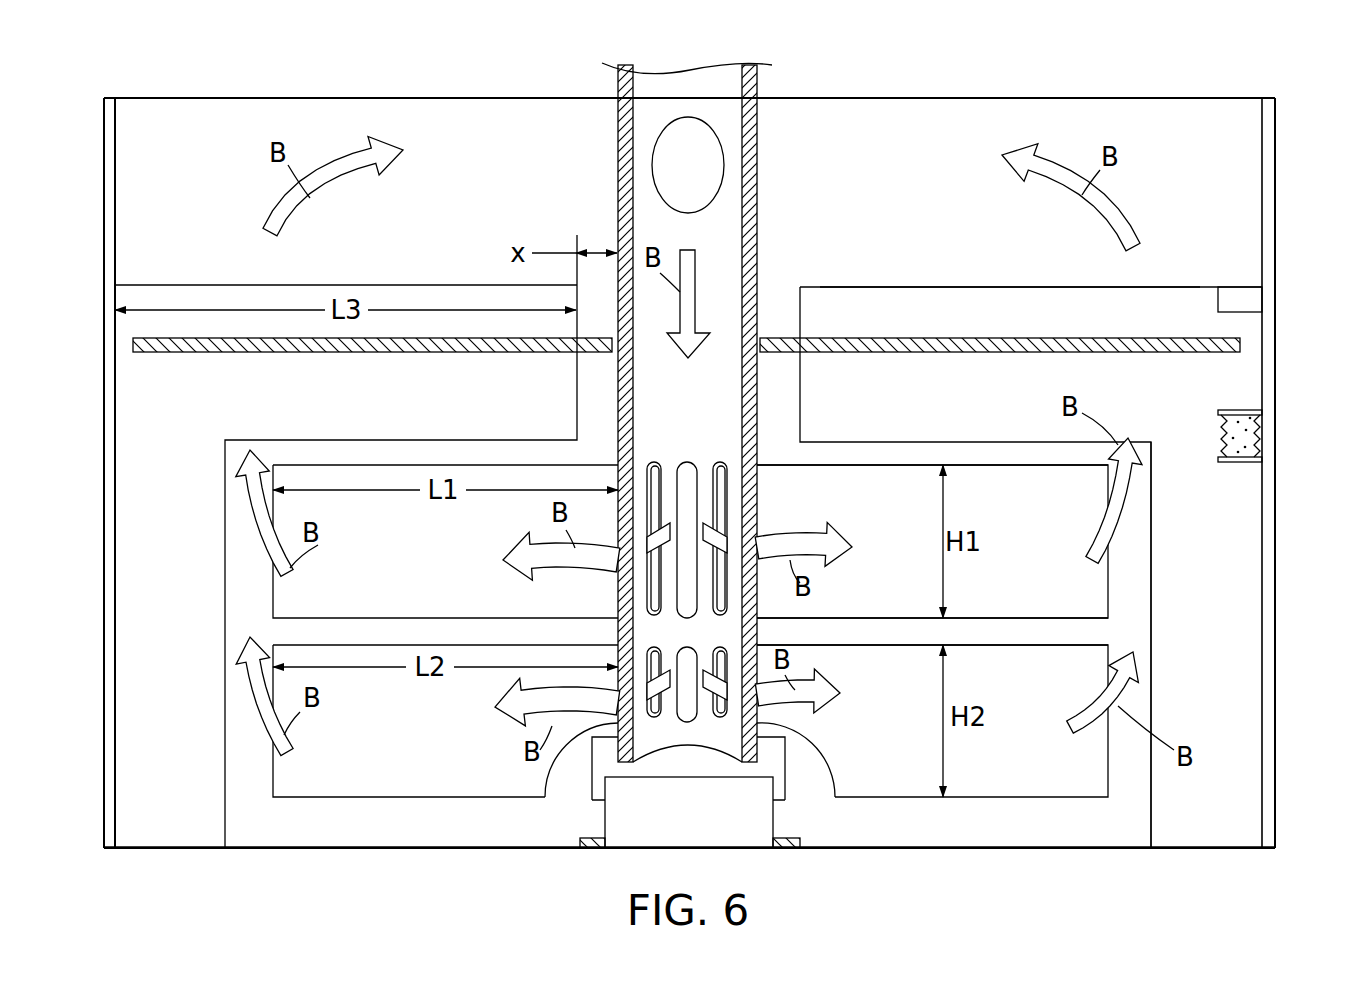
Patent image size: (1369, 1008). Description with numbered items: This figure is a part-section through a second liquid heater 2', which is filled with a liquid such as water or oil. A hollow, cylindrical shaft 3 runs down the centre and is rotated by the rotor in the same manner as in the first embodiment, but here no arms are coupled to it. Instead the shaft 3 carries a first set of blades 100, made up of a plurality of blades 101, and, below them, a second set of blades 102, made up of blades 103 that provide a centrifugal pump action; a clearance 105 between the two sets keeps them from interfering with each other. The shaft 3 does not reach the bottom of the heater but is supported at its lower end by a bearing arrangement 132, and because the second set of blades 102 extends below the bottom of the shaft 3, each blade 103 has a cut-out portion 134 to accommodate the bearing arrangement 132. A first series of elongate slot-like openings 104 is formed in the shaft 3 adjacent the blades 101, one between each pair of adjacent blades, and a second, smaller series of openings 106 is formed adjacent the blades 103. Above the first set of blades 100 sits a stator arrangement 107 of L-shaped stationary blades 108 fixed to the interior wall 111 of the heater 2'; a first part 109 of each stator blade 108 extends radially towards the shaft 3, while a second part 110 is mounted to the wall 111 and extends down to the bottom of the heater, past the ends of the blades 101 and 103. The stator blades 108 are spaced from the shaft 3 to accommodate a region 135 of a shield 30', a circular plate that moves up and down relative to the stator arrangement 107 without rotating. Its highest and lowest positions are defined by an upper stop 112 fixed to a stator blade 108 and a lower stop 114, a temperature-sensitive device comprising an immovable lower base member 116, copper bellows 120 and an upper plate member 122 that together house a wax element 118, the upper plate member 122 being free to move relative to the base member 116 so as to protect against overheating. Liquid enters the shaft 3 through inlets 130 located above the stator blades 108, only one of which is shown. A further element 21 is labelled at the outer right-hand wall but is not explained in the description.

The second liquid heater 2' is at (727, 473).
The shaft 3 is at (757, 182).
The outer wall 21 is at (1275, 643).
The shield 30' is at (372, 381).
The first set of blades 100 is at (1010, 530).
The blades 101 is at (857, 468).
The second set of blades 102 is at (993, 770).
The blades 103 is at (860, 648).
The first series of openings 104 is at (714, 468).
The clearance 105 is at (1032, 672).
The second series of openings 106 is at (686, 648).
The stator arrangement 107 is at (1025, 284).
The stator blades 108 is at (936, 398).
The first part of stator blade 109 is at (975, 290).
The second part of stator blade 110 is at (1180, 642).
The interior wall 111 is at (1262, 585).
The upper stop 112 is at (1233, 302).
The lower stop 114 is at (1250, 459).
The lower base member 116 is at (1235, 463).
The wax element 118 is at (1235, 432).
The copper bellows 120 is at (1218, 437).
The upper plate member 122 is at (1240, 410).
The inlets 130 is at (658, 164).
The bearing arrangement 132 is at (667, 833).
The cut-out portion 134 is at (558, 762).
The region of the shield 135 is at (777, 338).